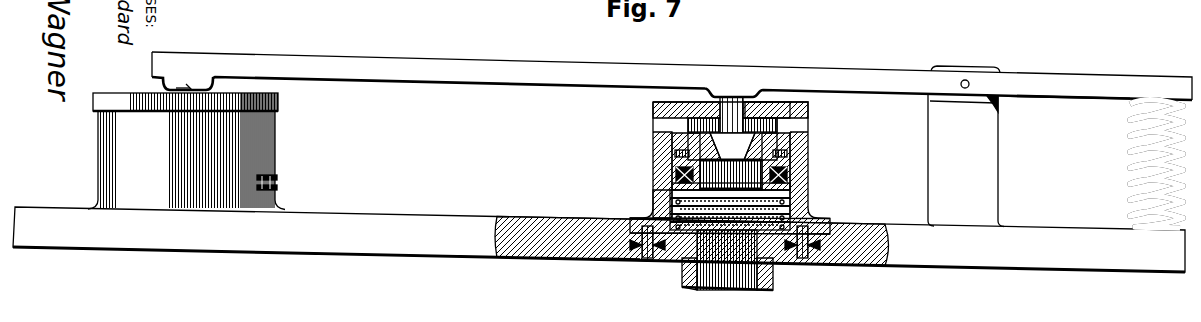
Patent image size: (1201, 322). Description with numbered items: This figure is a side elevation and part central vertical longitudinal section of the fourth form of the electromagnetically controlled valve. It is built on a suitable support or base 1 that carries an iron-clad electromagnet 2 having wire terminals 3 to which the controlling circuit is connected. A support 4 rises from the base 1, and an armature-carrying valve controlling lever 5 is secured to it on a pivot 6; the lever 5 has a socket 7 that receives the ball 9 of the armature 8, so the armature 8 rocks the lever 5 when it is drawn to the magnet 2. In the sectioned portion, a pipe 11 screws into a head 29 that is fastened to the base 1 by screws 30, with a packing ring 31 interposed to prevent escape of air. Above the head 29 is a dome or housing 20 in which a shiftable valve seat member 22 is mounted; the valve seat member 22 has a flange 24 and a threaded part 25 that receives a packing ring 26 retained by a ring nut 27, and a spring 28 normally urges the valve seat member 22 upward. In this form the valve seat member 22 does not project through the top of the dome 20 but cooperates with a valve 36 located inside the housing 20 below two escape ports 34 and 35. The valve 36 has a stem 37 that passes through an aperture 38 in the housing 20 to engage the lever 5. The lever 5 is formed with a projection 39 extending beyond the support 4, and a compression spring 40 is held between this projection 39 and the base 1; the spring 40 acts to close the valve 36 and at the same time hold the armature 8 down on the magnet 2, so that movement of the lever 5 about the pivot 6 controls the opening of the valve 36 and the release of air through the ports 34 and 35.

The support or base 1 is at (599, 239).
The iron-clad electromagnet 2 is at (186, 161).
The wire terminals 3 is at (278, 185).
The support 4 is at (966, 160).
The valve controlling lever 5 is at (672, 71).
The pivot 6 is at (966, 80).
The socket 7 is at (190, 88).
The armature 8 is at (279, 104).
The ball 9 is at (184, 88).
The pipe 11 is at (731, 290).
The dome or housing 20 is at (805, 185).
The shiftable valve seat member 22 is at (660, 158).
The flange 24 is at (791, 170).
The threaded part 25 is at (662, 188).
The packing ring 26 is at (800, 176).
The ring nut 27 is at (798, 181).
The spring 28 is at (792, 208).
The head 29 is at (665, 262).
The screws 30 is at (641, 236).
The packing ring 31 is at (612, 259).
The escape port 34 is at (796, 130).
The escape port 35 is at (663, 122).
The valve 36 is at (703, 142).
The stem 37 is at (728, 105).
The aperture 38 is at (757, 103).
The projection 39 is at (1072, 76).
The compression spring 40 is at (1141, 164).